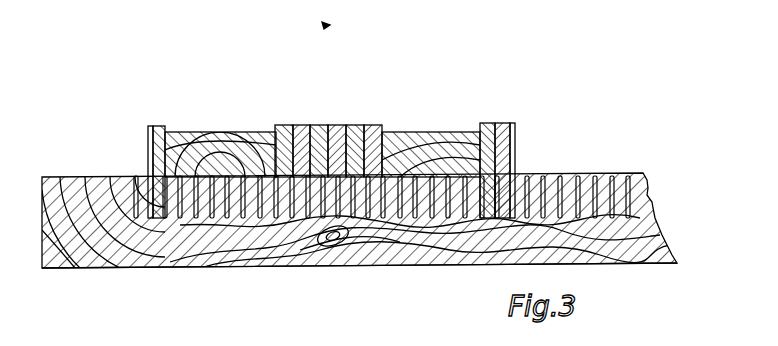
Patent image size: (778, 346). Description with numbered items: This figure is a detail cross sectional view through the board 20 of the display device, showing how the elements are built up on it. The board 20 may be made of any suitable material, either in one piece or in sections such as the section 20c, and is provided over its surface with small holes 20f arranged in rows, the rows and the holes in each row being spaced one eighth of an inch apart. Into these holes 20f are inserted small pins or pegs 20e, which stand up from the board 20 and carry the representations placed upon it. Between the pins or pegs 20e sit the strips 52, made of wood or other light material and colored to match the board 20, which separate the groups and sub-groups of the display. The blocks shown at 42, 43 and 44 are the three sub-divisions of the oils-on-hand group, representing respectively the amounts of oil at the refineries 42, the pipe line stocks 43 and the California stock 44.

The board 20 is at (468, 265).
The board section 20c is at (265, 267).
The pins or pegs 20e is at (148, 149).
The small holes 20f is at (596, 177).
The refineries representation 42 is at (162, 126).
The pipe line stocks representation 43 is at (337, 124).
The California stock representation 44 is at (486, 123).
The strips 52 is at (219, 142).